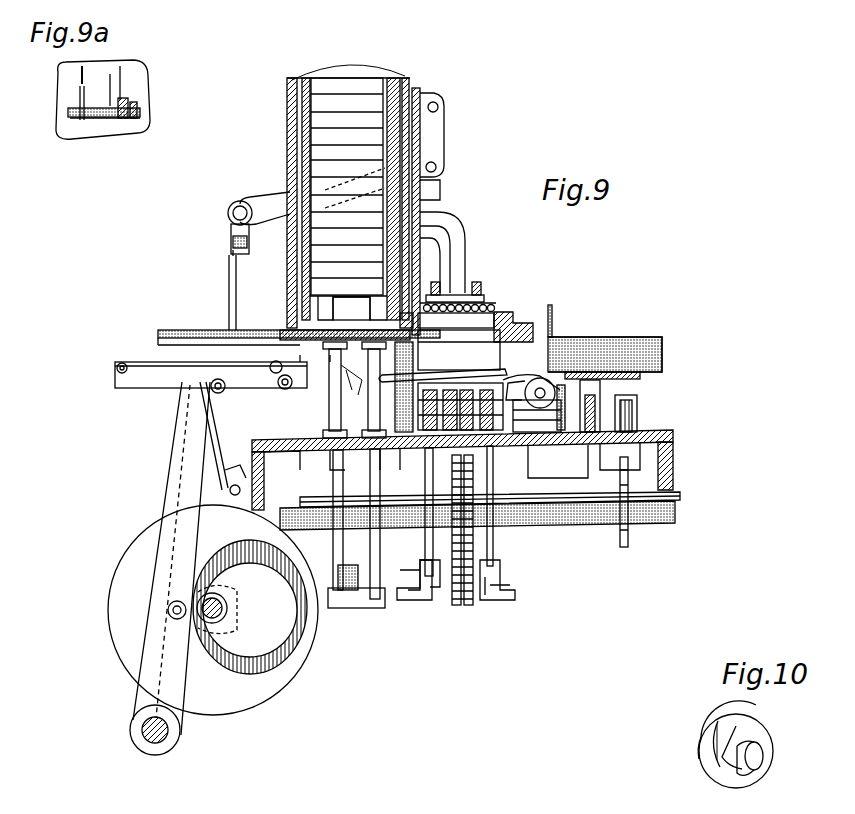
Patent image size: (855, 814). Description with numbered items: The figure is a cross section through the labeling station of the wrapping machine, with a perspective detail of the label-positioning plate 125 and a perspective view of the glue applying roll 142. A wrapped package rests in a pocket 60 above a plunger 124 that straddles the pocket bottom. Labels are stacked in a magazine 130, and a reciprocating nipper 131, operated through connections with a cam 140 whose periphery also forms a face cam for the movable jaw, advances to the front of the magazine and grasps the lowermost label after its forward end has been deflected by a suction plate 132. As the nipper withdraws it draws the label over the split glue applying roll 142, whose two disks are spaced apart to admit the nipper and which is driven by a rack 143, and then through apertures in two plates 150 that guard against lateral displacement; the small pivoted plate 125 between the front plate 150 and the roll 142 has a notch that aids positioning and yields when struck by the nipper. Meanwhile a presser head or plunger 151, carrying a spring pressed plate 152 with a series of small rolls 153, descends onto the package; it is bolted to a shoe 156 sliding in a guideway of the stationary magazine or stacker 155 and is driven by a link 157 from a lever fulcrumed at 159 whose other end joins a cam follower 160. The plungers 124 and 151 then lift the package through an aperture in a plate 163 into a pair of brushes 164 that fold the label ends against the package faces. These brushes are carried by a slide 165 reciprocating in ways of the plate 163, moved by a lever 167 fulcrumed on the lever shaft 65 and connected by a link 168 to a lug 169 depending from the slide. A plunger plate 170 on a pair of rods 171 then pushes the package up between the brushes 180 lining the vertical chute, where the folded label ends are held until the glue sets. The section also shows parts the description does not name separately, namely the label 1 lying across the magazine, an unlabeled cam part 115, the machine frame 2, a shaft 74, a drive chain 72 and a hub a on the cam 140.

In FIG. 9a, the pivoted plate 125 is at (140, 92).
In FIG. 9, the brushes 180 is at (348, 188).
In FIG. 9, the stationary magazine or stacker 155 is at (414, 82).
In FIG. 9, the shoe 156 is at (430, 136).
In FIG. 9, the link 157 is at (440, 150).
In FIG. 9, the lever fulcrum 159 is at (287, 200).
In FIG. 9, the cam follower 160 is at (228, 266).
In FIG. 9, the lug 169 is at (268, 333).
In FIG. 9, the plunger plate 170 is at (335, 332).
In FIG. 9, the link 168 is at (185, 398).
In FIG. 9, the lever 167 is at (189, 558).
In FIG. 9, the rods 171 is at (350, 407).
In FIG. 9, the presser head or plunger 151 is at (462, 260).
In FIG. 9, the spring pressed plate 152 is at (485, 298).
In FIG. 9, the small rolls 153 is at (490, 306).
In FIG. 9, the brushes 164 is at (456, 317).
In FIG. 9, the slide 165 is at (518, 320).
In FIG. 9, the plate 163 is at (533, 338).
In FIG. 9, the magazine 130 is at (657, 338).
In FIG. 9, the frame member 1 is at (660, 340).
In FIG. 9, the plates 150 is at (443, 356).
In FIG. 9, the pocket 60 is at (466, 395).
In FIG. 9, the cam follower 115 is at (531, 365).
In FIG. 9, the nipper 131 is at (549, 385).
In FIG. 9, the suction plate 132 is at (552, 398).
In FIG. 9, the glue applying roll 142 is at (636, 409).
In FIG. 10, the glue applying roll 142 is at (775, 733).
In FIG. 9, the plunger 124 is at (470, 490).
In FIG. 9, the rack 143 is at (565, 446).
In FIG. 9, the main frame 2 is at (475, 470).
In FIG. 9, the main shaft 74 is at (575, 520).
In FIG. 9, the drive chain 72 is at (462, 606).
In FIG. 9, the cam 140 is at (143, 538).
In FIG. 9, the hub a is at (226, 609).
In FIG. 9, the lever shaft 65 is at (155, 745).